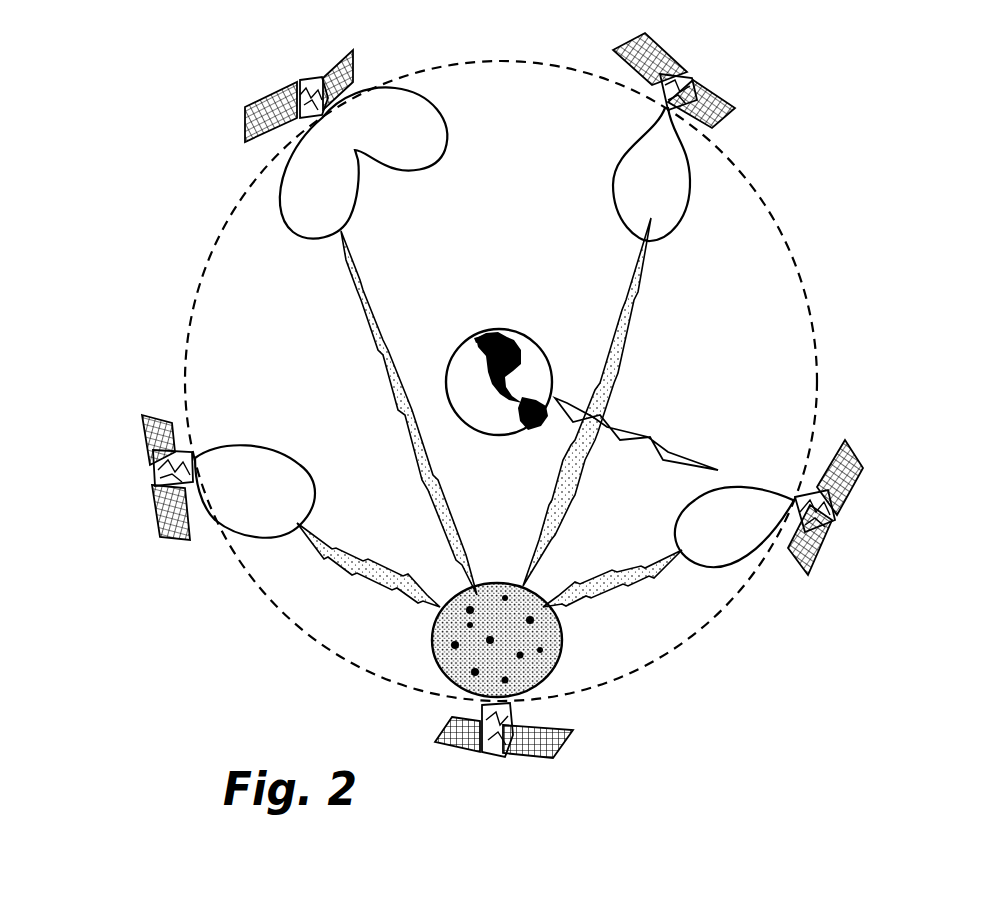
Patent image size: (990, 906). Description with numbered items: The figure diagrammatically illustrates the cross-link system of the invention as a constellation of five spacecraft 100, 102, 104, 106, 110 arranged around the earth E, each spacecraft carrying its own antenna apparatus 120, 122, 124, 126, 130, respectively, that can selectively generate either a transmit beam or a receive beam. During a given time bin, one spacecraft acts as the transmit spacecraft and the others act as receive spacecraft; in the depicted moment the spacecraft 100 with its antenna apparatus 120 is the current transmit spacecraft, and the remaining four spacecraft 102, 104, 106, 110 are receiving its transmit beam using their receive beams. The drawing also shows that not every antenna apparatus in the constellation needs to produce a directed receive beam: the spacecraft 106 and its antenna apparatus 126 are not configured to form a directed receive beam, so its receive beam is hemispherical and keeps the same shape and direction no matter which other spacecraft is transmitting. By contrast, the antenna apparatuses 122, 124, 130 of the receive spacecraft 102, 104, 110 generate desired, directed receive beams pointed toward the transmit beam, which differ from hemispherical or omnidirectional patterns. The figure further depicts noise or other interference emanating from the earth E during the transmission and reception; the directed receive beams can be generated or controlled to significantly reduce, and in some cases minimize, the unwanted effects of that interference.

The transmit spacecraft 100 is at (533, 757).
The spacecraft 102 is at (837, 498).
The spacecraft 104 is at (743, 107).
The spacecraft 106 is at (353, 67).
The spacecraft 110 is at (147, 453).
The antenna apparatus 120 is at (487, 747).
The antenna apparatus 122 is at (830, 520).
The antenna apparatus 124 is at (690, 72).
The antenna apparatus 126 is at (303, 82).
The antenna apparatus 130 is at (153, 470).
The earth E is at (505, 332).